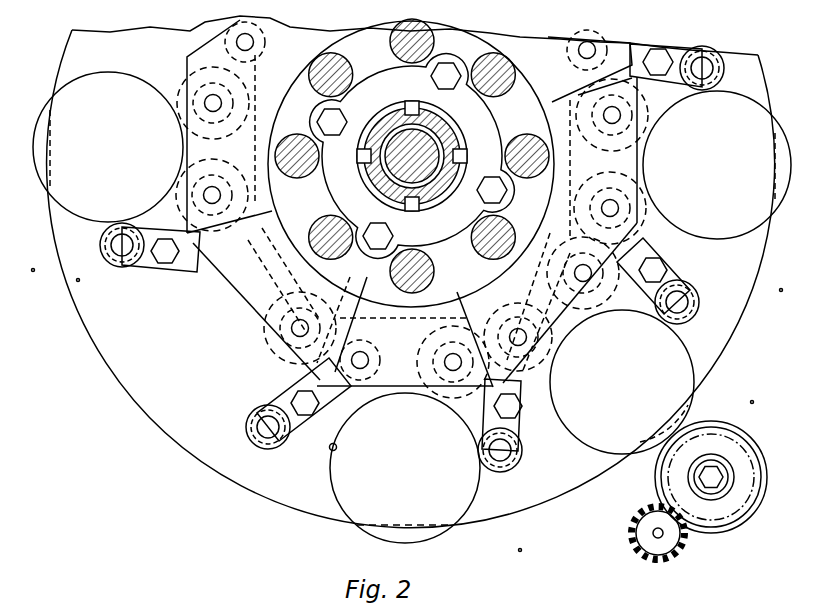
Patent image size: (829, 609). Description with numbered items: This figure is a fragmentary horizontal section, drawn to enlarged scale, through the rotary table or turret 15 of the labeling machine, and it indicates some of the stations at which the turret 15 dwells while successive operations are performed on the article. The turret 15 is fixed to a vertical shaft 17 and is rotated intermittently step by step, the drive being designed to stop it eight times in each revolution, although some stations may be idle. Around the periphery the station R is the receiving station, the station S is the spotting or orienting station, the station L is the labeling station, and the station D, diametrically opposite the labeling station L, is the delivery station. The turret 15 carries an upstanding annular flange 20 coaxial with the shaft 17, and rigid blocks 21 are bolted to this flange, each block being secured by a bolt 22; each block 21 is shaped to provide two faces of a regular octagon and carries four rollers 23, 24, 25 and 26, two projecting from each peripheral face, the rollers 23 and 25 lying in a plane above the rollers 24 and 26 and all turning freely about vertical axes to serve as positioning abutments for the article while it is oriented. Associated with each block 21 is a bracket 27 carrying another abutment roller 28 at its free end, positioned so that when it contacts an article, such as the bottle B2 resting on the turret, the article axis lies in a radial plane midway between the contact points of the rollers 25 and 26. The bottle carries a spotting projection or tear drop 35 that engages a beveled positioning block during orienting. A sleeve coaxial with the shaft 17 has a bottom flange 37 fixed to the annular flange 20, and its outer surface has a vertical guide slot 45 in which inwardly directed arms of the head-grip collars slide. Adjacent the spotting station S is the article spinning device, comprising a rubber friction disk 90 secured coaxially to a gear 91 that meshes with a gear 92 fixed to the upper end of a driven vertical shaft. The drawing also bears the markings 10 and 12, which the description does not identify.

The drive shaft 10 is at (616, 553).
The pivot axis arrows 12 is at (44, 245).
The rotary table or turret 15 is at (140, 398).
The vertical shaft 17 is at (397, 162).
The annular flange 20 is at (292, 300).
The rigid block 21 is at (277, 343).
The bolt 22 is at (386, 256).
The roller 23 is at (206, 300).
The roller 24 is at (292, 360).
The roller 25 is at (370, 389).
The roller 26 is at (460, 392).
The bracket 27 is at (262, 404).
The abutment roller 28 is at (285, 448).
The spotting projection or tear drop 35 is at (337, 448).
The bottom flange 37 is at (456, 222).
The vertical guide slot 45 is at (450, 118).
The disk 90 is at (656, 484).
The gear 91 is at (704, 528).
The gear 92 is at (659, 556).
The bottom roller B2 is at (358, 500).
The delivery station D is at (84, 250).
The labeling station L is at (785, 240).
The receiving station R is at (490, 541).
The spotting or orienting station S is at (748, 423).